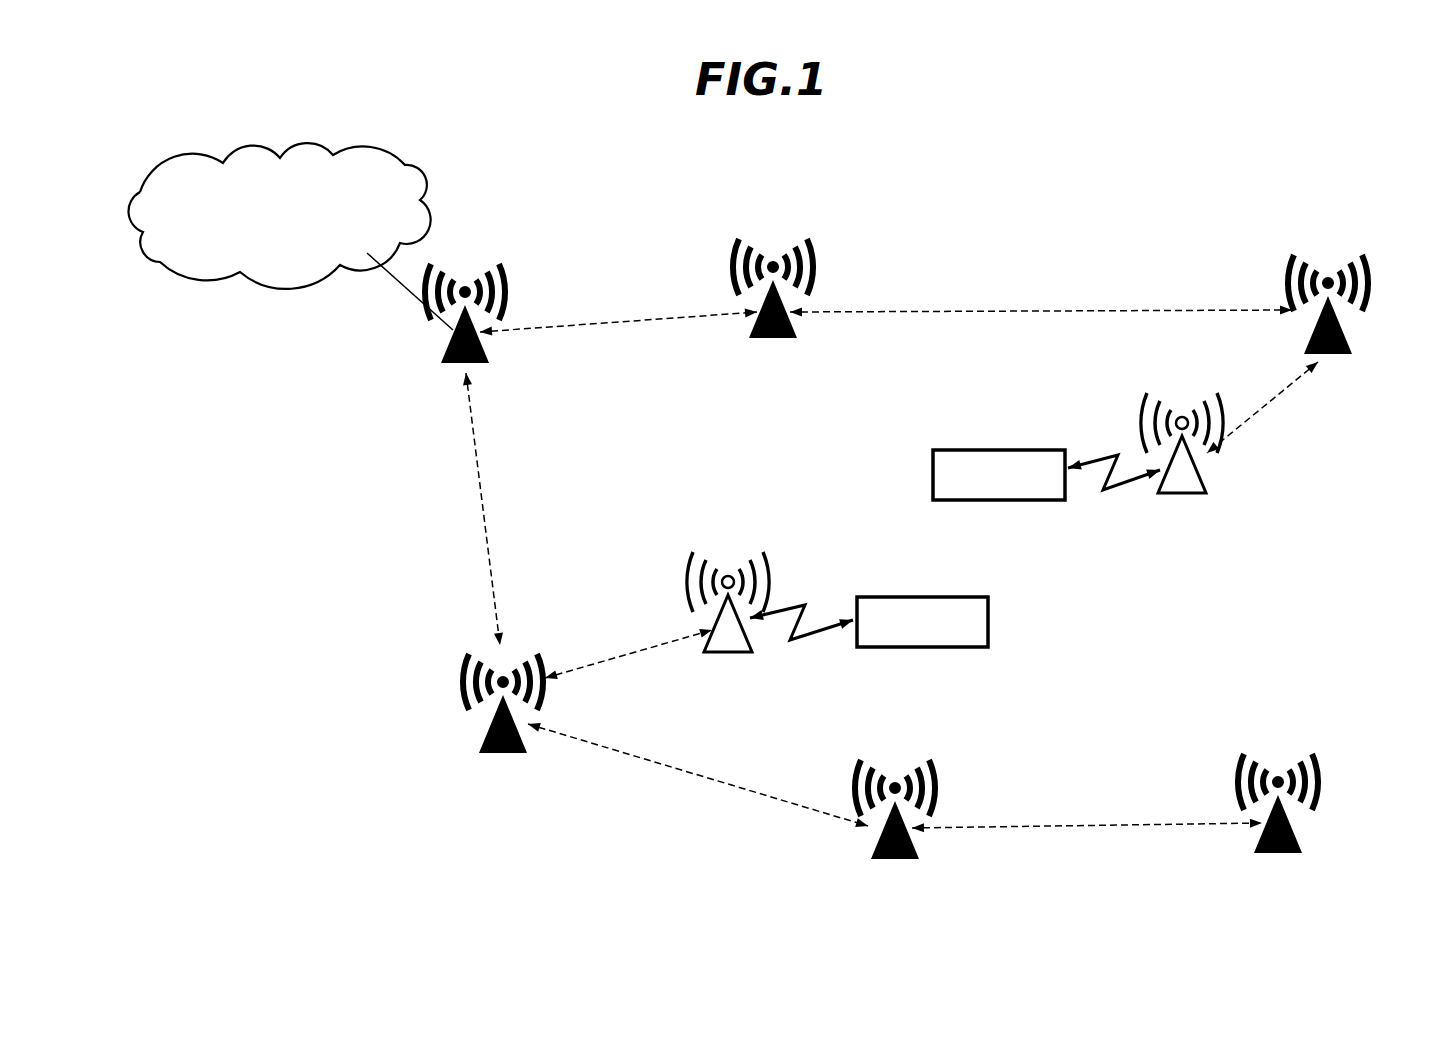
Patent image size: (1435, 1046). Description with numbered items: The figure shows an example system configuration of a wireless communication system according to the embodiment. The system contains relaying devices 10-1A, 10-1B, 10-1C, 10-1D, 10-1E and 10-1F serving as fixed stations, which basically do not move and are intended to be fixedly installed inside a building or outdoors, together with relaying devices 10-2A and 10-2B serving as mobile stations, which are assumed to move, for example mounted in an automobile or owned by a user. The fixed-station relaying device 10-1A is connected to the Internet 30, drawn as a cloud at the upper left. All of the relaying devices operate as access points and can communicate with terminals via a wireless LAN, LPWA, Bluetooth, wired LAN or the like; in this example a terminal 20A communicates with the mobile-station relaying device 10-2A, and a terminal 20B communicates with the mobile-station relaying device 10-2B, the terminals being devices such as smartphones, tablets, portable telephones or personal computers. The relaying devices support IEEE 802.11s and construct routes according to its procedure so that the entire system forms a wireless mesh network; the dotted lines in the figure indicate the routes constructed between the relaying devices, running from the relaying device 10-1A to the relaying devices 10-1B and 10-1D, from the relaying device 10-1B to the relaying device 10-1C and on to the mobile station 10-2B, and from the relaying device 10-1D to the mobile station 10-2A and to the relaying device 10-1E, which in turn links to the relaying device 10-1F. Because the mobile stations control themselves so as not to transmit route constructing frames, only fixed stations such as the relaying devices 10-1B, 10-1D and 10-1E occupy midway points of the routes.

The Internet 30 is at (417, 162).
The relaying device (fixed station) 10-1A is at (470, 267).
The relaying device (fixed station) 10-1B is at (782, 247).
The relaying device (fixed station) 10-1C is at (1330, 262).
The relaying device (fixed station) 10-1D is at (512, 652).
The relaying device (fixed station) 10-1E is at (897, 766).
The relaying device (fixed station) 10-1F is at (1283, 760).
The relaying device (mobile station) 10-2A is at (733, 560).
The relaying device (mobile station) 10-2B is at (1187, 400).
The terminal 20A is at (912, 595).
The terminal 20B is at (1022, 450).